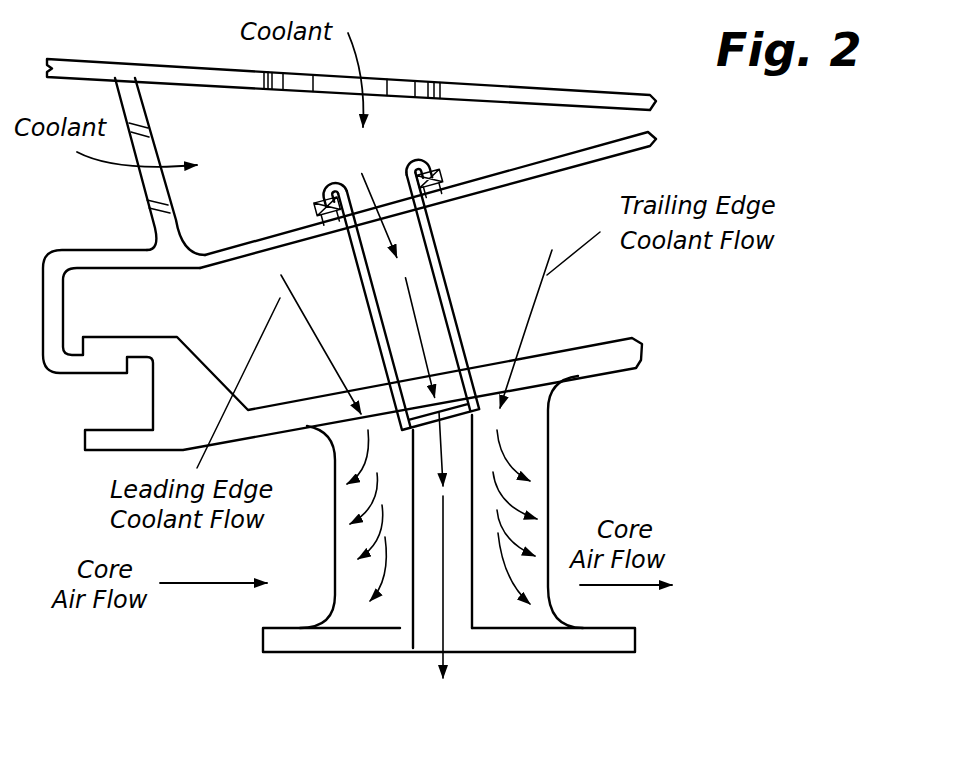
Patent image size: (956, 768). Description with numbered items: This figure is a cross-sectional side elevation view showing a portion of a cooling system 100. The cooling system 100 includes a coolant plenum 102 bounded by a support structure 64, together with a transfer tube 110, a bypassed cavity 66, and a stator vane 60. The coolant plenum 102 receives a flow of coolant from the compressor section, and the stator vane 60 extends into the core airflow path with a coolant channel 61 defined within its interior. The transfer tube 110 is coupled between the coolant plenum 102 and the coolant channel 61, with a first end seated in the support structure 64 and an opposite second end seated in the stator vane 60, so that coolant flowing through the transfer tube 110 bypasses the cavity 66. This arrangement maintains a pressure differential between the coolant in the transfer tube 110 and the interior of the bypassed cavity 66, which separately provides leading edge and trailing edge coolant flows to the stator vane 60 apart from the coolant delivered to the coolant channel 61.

The cooling system 100 is at (530, 72).
The coolant plenum 102 is at (252, 211).
The support structure 64 is at (527, 174).
The bypassed cavity 66 is at (300, 392).
The transfer tube 110 is at (447, 293).
The stator vane 60 is at (343, 537).
The coolant channel 61 is at (428, 604).